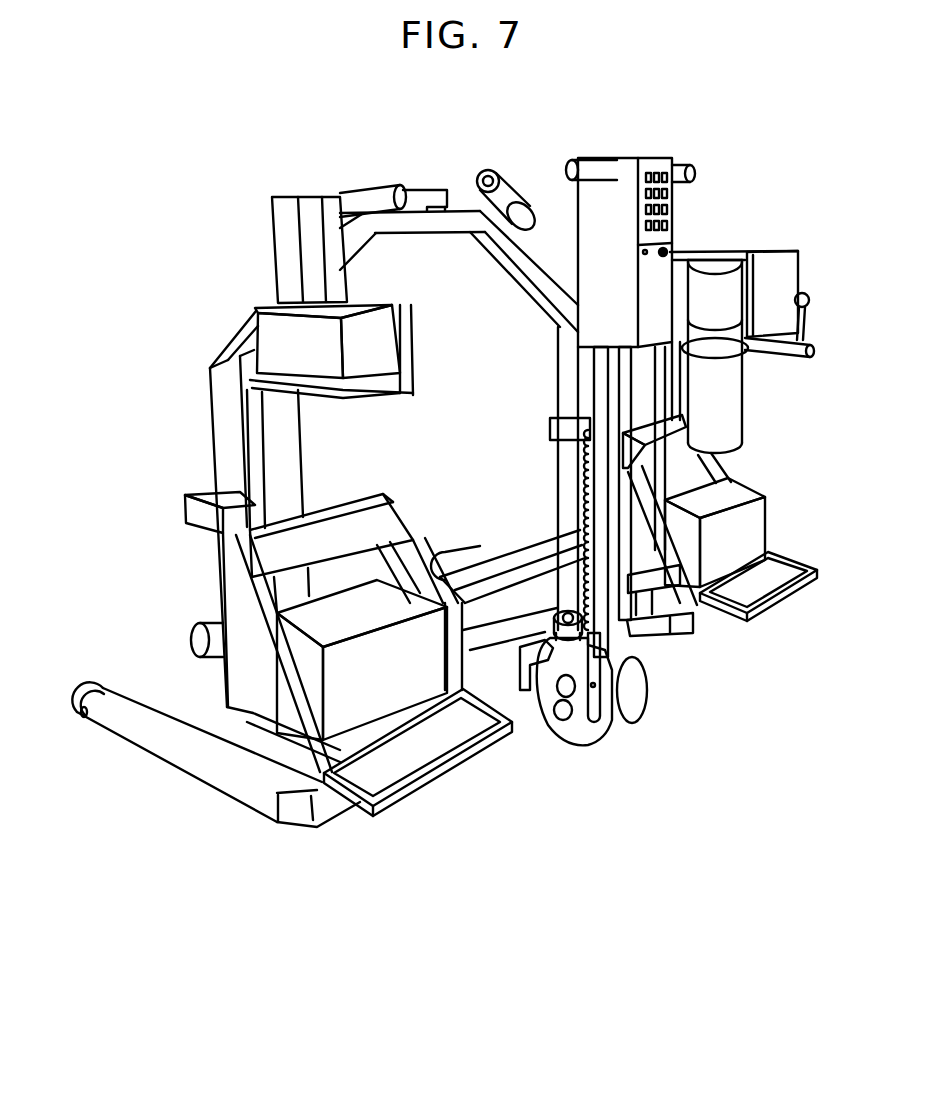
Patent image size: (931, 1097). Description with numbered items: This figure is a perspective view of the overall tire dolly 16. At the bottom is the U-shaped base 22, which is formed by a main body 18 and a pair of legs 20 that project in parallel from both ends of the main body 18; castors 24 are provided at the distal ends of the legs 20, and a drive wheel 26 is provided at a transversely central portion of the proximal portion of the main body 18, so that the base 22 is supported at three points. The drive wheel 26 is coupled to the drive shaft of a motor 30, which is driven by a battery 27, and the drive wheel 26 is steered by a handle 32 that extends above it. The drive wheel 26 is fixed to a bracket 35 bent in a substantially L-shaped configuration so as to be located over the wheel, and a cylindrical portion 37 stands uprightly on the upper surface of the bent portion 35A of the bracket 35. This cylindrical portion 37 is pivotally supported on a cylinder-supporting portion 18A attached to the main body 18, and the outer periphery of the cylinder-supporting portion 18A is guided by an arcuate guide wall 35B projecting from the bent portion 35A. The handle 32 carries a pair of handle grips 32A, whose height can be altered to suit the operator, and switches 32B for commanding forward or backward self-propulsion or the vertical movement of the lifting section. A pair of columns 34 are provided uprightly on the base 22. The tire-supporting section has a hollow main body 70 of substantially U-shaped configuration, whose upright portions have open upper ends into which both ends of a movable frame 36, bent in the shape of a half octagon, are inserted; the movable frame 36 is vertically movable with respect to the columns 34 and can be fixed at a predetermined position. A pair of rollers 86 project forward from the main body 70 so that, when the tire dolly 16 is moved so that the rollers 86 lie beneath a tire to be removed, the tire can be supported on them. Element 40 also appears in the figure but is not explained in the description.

The tire dolly 16 is at (692, 138).
The main body 18 is at (335, 805).
The cylinder-supporting portion 18A is at (527, 710).
The legs 20 is at (265, 800).
The base 22 is at (367, 897).
The castors 24 is at (90, 680).
The drive wheel 26 is at (612, 721).
The battery 27 is at (753, 522).
The motor 30 is at (648, 675).
The handle 32 is at (594, 222).
The handle grips 32A is at (683, 170).
The switches 32B is at (665, 208).
The columns 34 is at (290, 462).
The bracket 35 is at (587, 727).
The bent portion 35A is at (572, 648).
The arcuate guide wall 35B is at (645, 703).
The movable frame 36 is at (438, 233).
The cylindrical portion 37 is at (570, 611).
The cylinder on column 40 is at (382, 203).
The main body of the tire-supporting section 70 is at (223, 408).
The rollers 86 is at (207, 637).